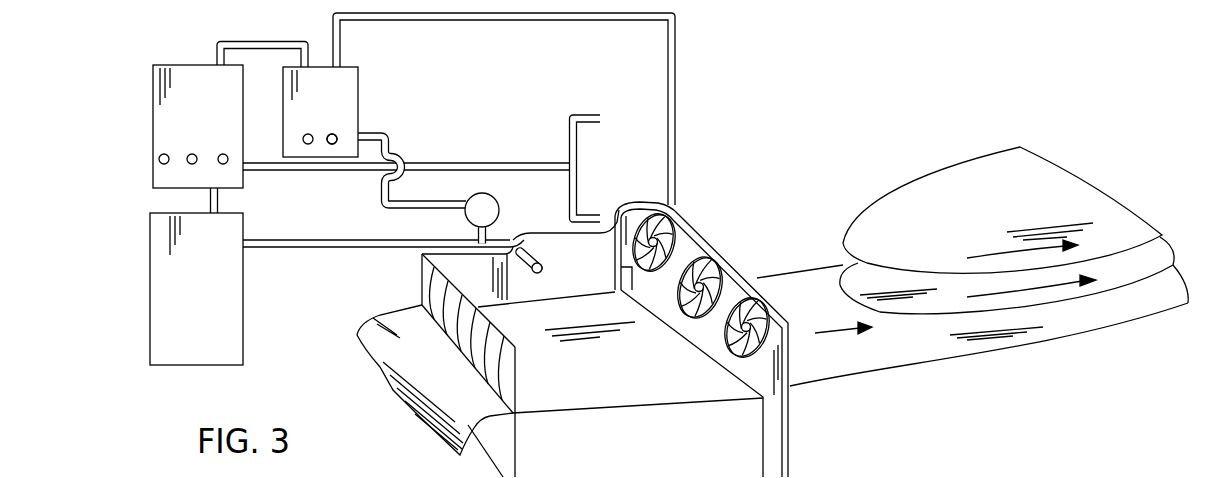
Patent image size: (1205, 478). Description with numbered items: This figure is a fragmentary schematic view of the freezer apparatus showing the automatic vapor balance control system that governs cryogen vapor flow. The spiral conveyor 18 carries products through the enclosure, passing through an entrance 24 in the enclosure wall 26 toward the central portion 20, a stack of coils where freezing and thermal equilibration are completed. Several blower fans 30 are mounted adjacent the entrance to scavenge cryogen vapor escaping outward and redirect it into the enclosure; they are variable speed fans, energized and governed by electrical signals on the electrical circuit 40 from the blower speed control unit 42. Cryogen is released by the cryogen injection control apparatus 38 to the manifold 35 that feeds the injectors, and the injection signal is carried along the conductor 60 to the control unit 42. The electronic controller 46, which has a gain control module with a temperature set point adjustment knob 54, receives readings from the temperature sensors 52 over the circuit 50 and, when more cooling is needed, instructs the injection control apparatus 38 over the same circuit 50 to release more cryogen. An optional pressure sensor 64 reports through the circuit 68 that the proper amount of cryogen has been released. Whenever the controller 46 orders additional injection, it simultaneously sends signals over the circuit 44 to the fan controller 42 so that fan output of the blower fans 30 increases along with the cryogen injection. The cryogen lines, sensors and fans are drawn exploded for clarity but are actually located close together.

The spiral conveyor 18 is at (827, 357).
The central portion 20 is at (908, 240).
The entrance 24 is at (437, 297).
The enclosure wall 26 is at (502, 440).
The blower fans 30 is at (708, 277).
The manifold 35 is at (538, 258).
The cryogen injection control apparatus 38 is at (178, 294).
The electrical circuit 40 is at (477, 21).
The blower speed control unit 42 is at (306, 109).
The circuit 44 is at (265, 41).
The electronic controller 46 is at (178, 109).
The circuit 50 is at (478, 163).
The temperature sensors 52 is at (588, 113).
The temperature set point adjustment knob 54 is at (336, 133).
The conductor 60 is at (219, 199).
The pressure sensor 64 is at (497, 199).
The circuit 68 is at (382, 198).